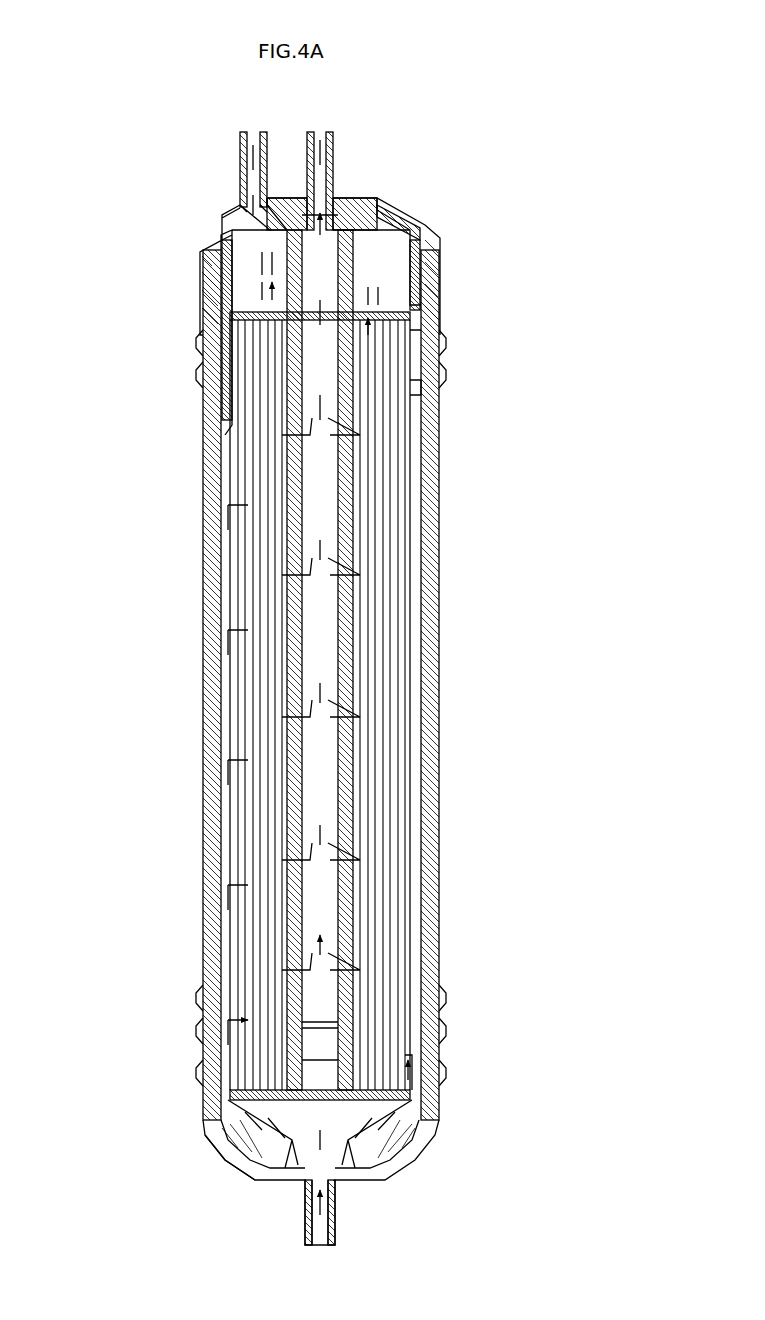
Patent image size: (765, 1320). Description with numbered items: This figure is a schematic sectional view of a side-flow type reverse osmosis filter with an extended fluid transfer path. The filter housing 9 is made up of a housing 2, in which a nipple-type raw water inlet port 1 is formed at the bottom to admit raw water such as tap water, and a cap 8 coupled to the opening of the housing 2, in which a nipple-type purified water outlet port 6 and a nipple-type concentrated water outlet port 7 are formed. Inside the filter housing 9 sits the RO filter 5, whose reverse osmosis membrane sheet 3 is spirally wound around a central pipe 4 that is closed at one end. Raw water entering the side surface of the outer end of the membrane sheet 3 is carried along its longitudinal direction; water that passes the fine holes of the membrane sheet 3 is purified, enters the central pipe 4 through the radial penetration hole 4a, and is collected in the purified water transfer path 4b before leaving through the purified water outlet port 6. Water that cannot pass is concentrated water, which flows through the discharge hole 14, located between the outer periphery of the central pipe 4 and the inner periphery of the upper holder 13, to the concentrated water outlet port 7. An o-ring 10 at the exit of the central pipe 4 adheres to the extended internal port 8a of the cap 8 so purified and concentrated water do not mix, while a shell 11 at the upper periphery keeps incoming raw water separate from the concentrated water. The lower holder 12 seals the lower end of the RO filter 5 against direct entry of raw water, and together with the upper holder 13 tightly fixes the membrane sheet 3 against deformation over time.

The raw water inlet port 1 is at (320, 1212).
The housing 2 is at (197, 305).
The reverse osmosis membrane sheet 3 is at (380, 470).
The central pipe 4 is at (402, 652).
The penetration hole 4a is at (350, 850).
The purified water transfer path 4b is at (320, 770).
The RO filter 5 is at (407, 618).
The purified water outlet port 6 is at (334, 164).
The concentrated water outlet port 7 is at (240, 133).
The cap 8 is at (215, 238).
The extended internal port 8a is at (226, 215).
The filter housing 9 is at (249, 287).
The o-ring 10 is at (385, 238).
The shell 11 is at (407, 392).
The lower holder 12 is at (335, 1230).
The upper holder 13 is at (420, 298).
The discharge hole 14 is at (232, 375).